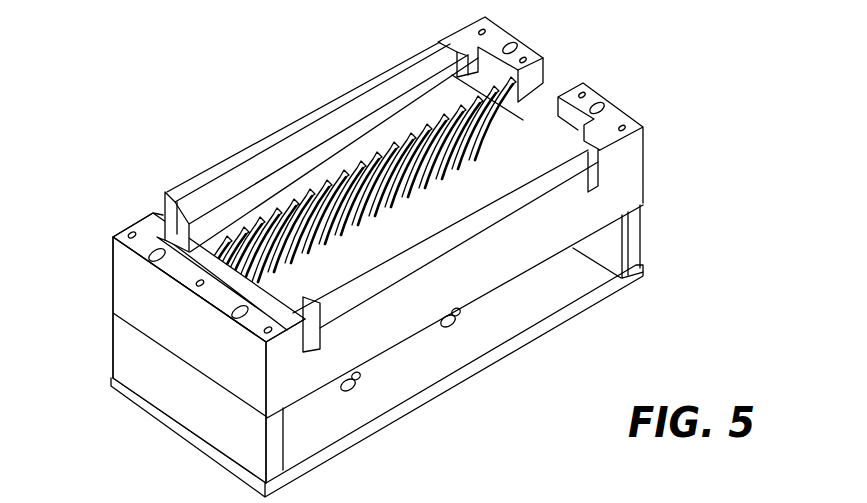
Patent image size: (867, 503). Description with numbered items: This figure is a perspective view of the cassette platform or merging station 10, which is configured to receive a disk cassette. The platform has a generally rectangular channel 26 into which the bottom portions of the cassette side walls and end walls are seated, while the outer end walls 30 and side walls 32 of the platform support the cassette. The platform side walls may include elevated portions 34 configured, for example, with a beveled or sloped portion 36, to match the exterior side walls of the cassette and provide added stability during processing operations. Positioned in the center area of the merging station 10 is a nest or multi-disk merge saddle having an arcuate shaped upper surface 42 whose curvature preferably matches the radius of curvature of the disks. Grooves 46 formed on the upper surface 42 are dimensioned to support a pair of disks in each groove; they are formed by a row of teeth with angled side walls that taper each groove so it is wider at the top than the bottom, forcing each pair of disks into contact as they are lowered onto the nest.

The merging station 10 is at (745, 224).
The rectangular channel 26 is at (200, 187).
The outer end walls 30 is at (180, 270).
The side walls 32 is at (417, 296).
The elevated portions 34 is at (163, 197).
The beveled or sloped portion 36 is at (215, 223).
The arcuate shaped upper surface 42 is at (400, 130).
The grooves 46 is at (310, 187).